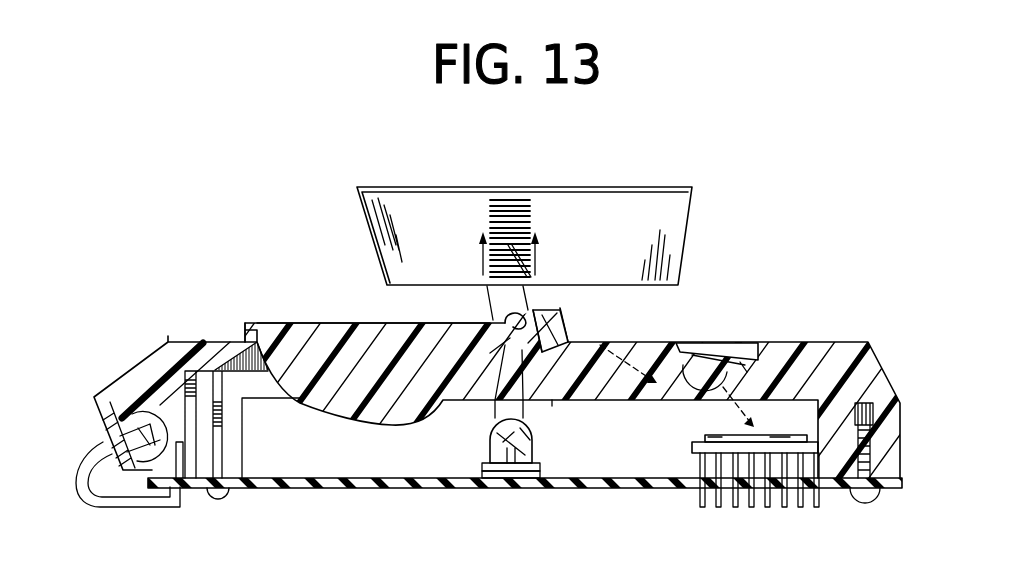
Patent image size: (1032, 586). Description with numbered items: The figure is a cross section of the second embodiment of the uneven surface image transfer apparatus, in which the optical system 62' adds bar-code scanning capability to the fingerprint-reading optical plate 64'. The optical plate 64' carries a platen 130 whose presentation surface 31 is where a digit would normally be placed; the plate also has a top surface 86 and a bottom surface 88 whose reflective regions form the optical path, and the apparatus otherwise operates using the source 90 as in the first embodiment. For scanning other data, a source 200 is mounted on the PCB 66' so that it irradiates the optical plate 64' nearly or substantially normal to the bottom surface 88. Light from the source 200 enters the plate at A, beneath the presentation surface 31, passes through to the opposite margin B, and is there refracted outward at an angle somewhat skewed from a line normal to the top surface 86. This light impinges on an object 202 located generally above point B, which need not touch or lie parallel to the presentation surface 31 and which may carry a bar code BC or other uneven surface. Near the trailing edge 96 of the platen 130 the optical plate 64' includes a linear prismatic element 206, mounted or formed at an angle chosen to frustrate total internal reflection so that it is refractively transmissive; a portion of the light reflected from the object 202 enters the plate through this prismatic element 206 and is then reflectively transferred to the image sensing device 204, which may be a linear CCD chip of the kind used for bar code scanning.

The presentation surface 31 is at (323, 323).
The optical system 62' is at (538, 381).
The optical plate 64' is at (169, 372).
The PCB 66' is at (528, 510).
The top surface 86 is at (660, 342).
The bottom surface 88 is at (552, 404).
The source 90 is at (103, 414).
The trailing edge 96 is at (508, 327).
The platen 130 is at (255, 322).
The source 200 is at (532, 446).
The object 202 is at (407, 202).
The image sensing device 204 is at (695, 445).
The linear prismatic element 206 is at (548, 308).
The point A is at (490, 402).
The opposite margin B is at (485, 321).
The bar code BC is at (514, 212).